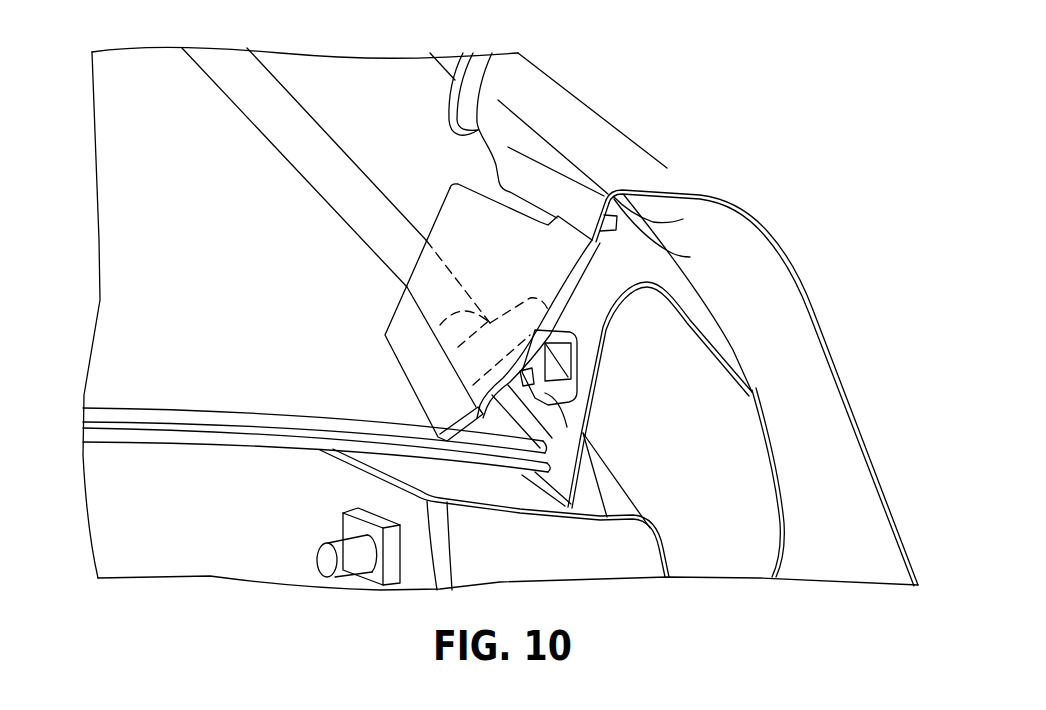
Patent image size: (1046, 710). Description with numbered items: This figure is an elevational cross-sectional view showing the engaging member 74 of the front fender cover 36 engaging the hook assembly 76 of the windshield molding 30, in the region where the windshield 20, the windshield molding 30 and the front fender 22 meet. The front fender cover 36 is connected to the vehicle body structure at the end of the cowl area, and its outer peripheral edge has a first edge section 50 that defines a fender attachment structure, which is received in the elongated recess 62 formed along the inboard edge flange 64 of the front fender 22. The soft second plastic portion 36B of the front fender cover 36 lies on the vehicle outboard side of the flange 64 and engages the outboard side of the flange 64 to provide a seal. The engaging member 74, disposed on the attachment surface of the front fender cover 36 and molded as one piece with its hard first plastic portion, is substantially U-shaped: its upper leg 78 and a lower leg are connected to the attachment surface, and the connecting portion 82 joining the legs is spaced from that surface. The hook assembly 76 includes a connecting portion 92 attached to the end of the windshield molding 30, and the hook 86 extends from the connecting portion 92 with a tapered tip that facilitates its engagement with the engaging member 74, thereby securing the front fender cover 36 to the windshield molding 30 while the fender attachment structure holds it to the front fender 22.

The windshield 20 is at (140, 347).
The front fender 22 is at (648, 172).
The windshield molding 30 is at (339, 143).
The front fender cover 36 is at (432, 209).
The second plastic portion 36B is at (690, 257).
The first edge section 50 is at (609, 192).
The elongated recess 62 is at (683, 219).
The inboard edge flange 64 is at (525, 182).
The engaging member 74 is at (598, 352).
The hook assembly 76 is at (458, 335).
The upper leg 78 is at (558, 323).
The connecting portion 82 is at (572, 340).
The hook 86 is at (558, 358).
The connecting portion 92 is at (477, 317).